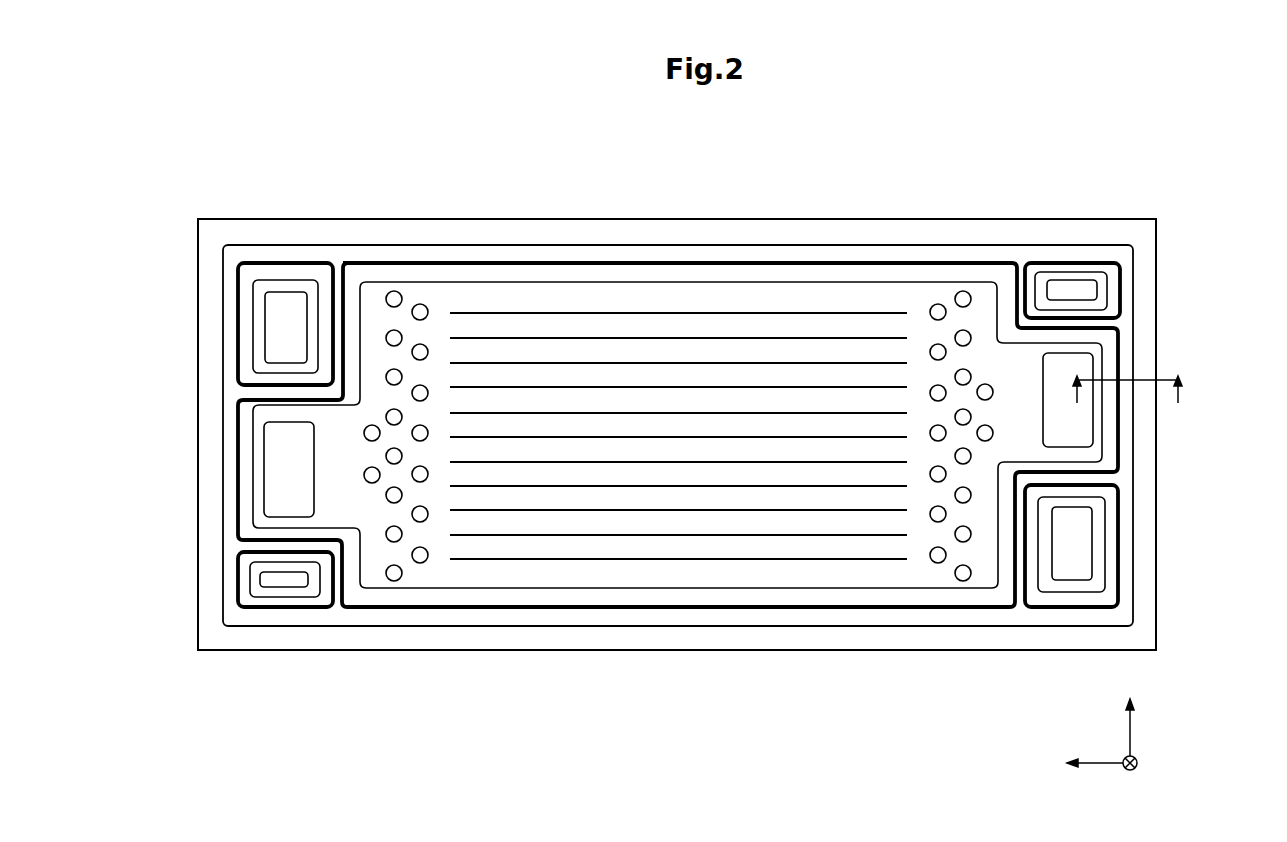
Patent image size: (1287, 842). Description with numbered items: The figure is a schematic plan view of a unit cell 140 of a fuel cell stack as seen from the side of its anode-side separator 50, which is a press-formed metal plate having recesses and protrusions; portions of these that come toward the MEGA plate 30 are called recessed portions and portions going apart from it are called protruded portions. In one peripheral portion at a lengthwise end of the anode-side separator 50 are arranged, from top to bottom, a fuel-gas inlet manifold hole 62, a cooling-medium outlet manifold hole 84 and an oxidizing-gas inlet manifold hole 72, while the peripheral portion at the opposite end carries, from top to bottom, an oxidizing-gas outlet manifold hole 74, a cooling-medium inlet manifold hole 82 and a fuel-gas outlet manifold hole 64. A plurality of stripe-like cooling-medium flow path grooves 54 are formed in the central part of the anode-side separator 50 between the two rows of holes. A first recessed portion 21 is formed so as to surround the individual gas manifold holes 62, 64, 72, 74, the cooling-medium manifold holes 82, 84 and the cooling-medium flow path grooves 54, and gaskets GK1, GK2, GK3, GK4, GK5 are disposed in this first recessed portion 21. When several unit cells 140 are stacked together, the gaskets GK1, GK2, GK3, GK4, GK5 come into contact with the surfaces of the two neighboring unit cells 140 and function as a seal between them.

The unit cell 140 is at (1130, 122).
The anode-side separator 50 is at (1157, 219).
The MEGA plate 30 is at (767, 219).
The first recessed portion 21 is at (695, 253).
The cooling-medium flow path grooves 54 is at (623, 426).
The oxidizing-gas outlet manifold hole 74 is at (293, 303).
The cooling-medium inlet manifold hole 82 is at (283, 470).
The fuel-gas outlet manifold hole 64 is at (267, 582).
The fuel-gas inlet manifold hole 62 is at (1073, 290).
The cooling-medium outlet manifold hole 84 is at (1077, 428).
The oxidizing-gas inlet manifold hole 72 is at (1080, 540).
The gasket GK1 is at (1118, 312).
The gasket GK2 is at (283, 608).
The gasket GK3 is at (1120, 570).
The gasket GK4 is at (238, 360).
The gasket GK5 is at (630, 607).